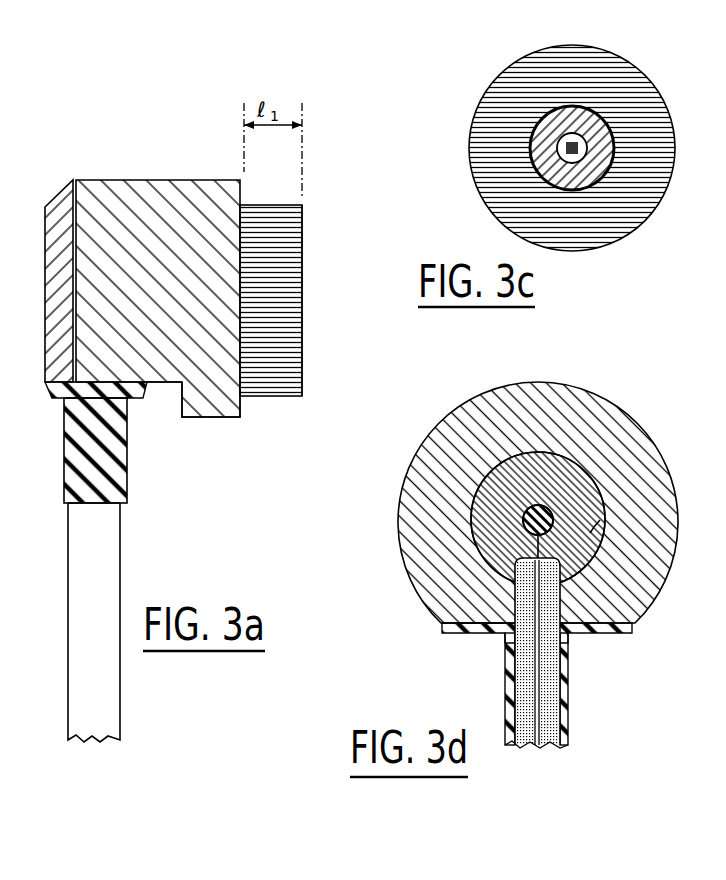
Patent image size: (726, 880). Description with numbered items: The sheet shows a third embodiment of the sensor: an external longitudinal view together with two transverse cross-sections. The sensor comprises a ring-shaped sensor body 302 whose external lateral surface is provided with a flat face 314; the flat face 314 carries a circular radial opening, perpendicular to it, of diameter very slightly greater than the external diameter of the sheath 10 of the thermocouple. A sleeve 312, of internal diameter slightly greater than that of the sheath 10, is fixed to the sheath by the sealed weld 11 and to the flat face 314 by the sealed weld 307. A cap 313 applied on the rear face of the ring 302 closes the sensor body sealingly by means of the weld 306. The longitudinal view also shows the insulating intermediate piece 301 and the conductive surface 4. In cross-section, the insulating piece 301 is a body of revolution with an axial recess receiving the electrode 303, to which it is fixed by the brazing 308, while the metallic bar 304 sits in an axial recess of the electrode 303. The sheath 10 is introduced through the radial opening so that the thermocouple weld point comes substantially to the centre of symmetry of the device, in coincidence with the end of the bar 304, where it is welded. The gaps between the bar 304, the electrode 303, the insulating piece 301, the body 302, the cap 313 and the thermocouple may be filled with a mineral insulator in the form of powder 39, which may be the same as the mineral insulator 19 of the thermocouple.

In FIG. 3a, the conductive surface 4 is at (308, 331).
In FIG. 3a, the sheath 10 is at (102, 577).
In FIG. 3d, the sheath 10 is at (561, 734).
In FIG. 3a, the sealed weld 11 is at (63, 512).
In FIG. 3d, the mineral insulator 19 is at (546, 677).
In FIG. 3d, the powder 39 is at (590, 533).
In FIG. 3a, the insulating intermediate piece 301 is at (281, 382).
In FIG. 3c, the insulating intermediate piece 301 is at (490, 186).
In FIG. 3a, the sensor body 302 is at (218, 405).
In FIG. 3d, the sensor body 302 is at (640, 460).
In FIG. 3c, the electrode 303 is at (543, 135).
In FIG. 3c, the metallic bar 304 is at (593, 153).
In FIG. 3d, the metallic bar 304 is at (468, 462).
In FIG. 3a, the weld 306 is at (76, 172).
In FIG. 3a, the sealed weld 307 is at (39, 388).
In FIG. 3d, the sealed weld 307 is at (609, 633).
In FIG. 3c, the brazing 308 is at (518, 153).
In FIG. 3a, the sleeve 312 is at (114, 472).
In FIG. 3d, the sleeve 312 is at (500, 695).
In FIG. 3a, the cap 313 is at (62, 222).
In FIG. 3a, the flat face 314 is at (165, 392).
In FIG. 3d, the flat face 314 is at (457, 634).